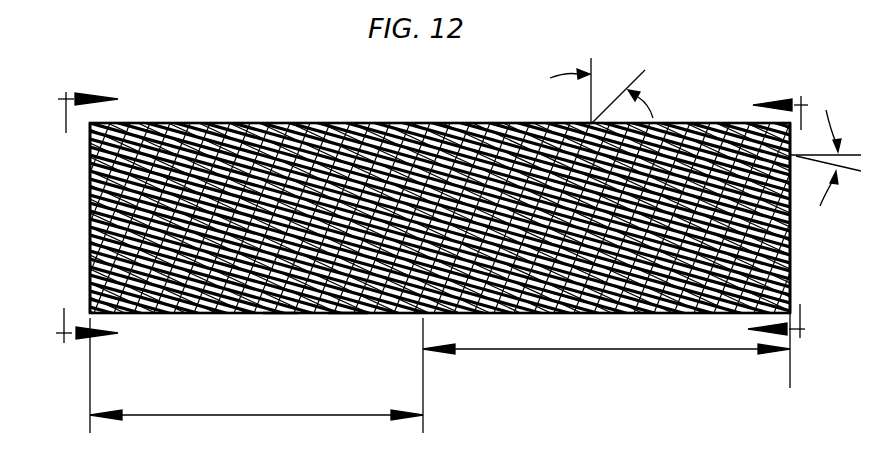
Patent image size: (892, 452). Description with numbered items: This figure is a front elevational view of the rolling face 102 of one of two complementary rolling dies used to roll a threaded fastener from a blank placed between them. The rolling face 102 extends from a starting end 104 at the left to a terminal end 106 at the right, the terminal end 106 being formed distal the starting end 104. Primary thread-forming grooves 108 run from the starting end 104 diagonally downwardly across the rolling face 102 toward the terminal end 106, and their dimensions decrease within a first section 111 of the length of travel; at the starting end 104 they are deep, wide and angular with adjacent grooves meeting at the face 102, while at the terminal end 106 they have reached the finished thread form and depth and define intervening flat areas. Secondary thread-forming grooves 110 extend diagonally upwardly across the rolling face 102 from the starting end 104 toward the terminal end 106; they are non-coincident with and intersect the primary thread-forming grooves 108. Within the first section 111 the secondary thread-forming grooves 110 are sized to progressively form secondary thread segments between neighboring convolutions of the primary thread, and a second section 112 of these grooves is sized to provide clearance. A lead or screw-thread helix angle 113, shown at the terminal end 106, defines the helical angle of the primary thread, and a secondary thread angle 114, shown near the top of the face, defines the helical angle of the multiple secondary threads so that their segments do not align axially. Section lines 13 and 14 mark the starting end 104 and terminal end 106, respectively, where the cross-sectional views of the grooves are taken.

The section line 13- 13 is at (85, 214).
The section line 14- 14 is at (783, 217).
The rolling face 102 is at (328, 111).
The starting end 104 is at (82, 188).
The terminal end 106 is at (782, 212).
The primary thread-forming grooves 108 is at (340, 305).
The secondary thread-forming grooves 110 is at (270, 305).
The first section 111 is at (256, 375).
The second section 112 is at (606, 351).
The lead or screw-thread helix angle 113 is at (839, 147).
The secondary thread angle 114 is at (603, 73).